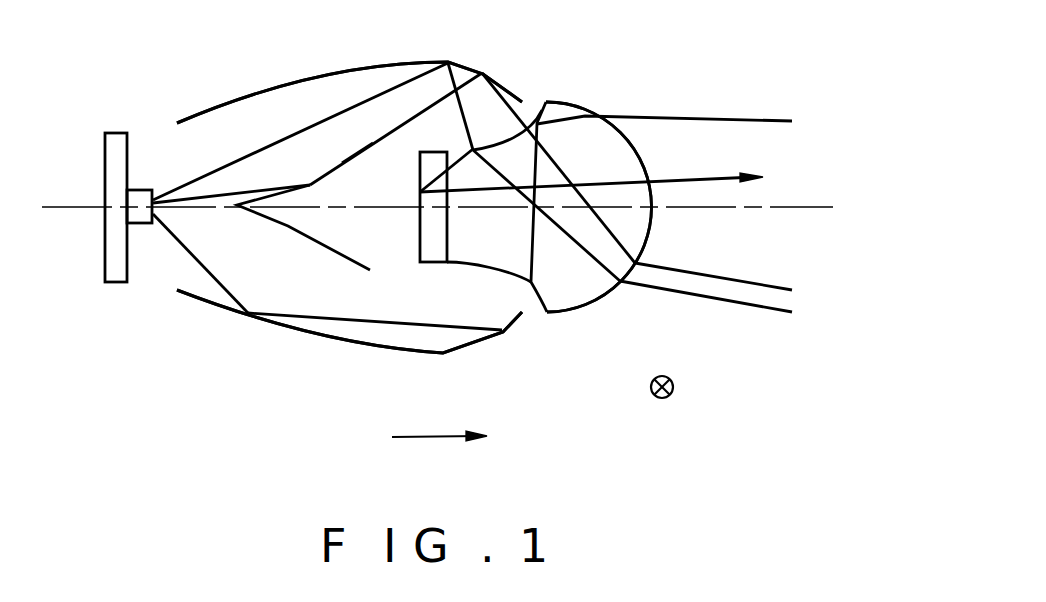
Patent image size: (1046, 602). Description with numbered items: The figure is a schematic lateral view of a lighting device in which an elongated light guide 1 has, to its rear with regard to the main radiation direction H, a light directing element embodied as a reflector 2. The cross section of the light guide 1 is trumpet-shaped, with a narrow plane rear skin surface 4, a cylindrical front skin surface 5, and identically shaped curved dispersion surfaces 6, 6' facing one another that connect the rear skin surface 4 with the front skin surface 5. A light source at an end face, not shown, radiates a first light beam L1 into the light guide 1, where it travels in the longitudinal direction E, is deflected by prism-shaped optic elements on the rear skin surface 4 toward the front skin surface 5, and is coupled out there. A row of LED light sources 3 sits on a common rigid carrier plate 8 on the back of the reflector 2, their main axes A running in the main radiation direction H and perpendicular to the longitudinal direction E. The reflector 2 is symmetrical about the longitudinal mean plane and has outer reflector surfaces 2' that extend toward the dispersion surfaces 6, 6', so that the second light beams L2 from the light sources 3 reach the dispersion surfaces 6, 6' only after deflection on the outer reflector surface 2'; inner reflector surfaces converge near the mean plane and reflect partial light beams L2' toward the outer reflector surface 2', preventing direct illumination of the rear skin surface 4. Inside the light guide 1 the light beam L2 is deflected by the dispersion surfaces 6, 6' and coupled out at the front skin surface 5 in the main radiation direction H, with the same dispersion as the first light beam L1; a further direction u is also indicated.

The light guide 1 is at (592, 147).
The reflector 2 is at (349, 227).
The outer reflector surface 2' is at (349, 207).
The light source 3 is at (142, 190).
The rear skin surface 4 is at (418, 241).
The front skin surface 5 is at (648, 237).
The curved dispersion surface 6 is at (507, 93).
The curved dispersion surface 6' is at (489, 329).
The carrier plate 8 is at (117, 283).
The main axis A is at (80, 207).
The first light beam L1 is at (712, 178).
The second light beam L2 is at (472, 206).
The partial light beam L2' is at (425, 185).
The direction u is at (792, 206).
The main radiation direction H is at (438, 440).
The longitudinal direction E is at (673, 391).